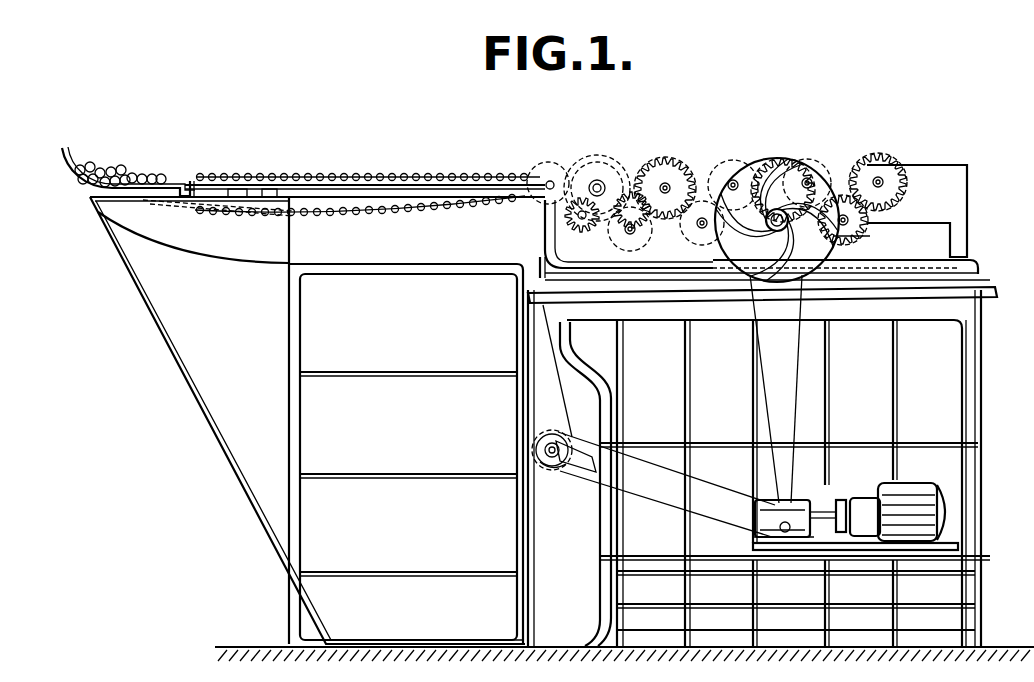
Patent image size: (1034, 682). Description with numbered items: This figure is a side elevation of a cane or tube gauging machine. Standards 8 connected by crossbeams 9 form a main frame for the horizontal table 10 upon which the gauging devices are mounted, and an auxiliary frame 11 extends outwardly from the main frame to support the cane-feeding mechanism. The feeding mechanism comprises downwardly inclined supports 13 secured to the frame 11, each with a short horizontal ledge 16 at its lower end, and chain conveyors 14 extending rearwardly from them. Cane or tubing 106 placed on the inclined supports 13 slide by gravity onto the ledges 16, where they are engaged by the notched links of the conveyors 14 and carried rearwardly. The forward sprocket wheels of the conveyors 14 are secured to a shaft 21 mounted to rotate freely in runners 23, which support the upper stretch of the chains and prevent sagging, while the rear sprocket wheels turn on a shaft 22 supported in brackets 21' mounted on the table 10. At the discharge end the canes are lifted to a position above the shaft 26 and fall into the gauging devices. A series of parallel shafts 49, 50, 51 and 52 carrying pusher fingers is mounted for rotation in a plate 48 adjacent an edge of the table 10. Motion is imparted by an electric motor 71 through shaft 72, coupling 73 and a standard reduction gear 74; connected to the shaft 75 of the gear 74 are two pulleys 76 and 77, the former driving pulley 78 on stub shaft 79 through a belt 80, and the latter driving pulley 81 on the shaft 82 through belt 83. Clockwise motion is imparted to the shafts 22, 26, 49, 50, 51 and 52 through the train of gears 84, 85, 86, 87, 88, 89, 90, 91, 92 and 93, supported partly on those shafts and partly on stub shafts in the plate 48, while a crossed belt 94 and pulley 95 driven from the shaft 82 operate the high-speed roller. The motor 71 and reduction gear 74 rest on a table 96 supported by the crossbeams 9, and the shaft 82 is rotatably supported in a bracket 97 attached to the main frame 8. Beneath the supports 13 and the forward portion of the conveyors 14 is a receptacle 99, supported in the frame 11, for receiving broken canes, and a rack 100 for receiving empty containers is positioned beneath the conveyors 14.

The standards 8 is at (960, 386).
The crossbeams 9 is at (932, 316).
The horizontal table 10 is at (983, 262).
The auxiliary frame 11 is at (168, 350).
The downwardly inclined supports or brackets 13 is at (70, 170).
The chain conveyors 14 is at (356, 173).
The short horizontal ledge 16 is at (191, 178).
The shaft 21 is at (368, 160).
The brackets 21' is at (603, 233).
The shaft 22 is at (556, 178).
The runners 23 is at (436, 185).
The shaft 26 is at (597, 186).
The plate 48 is at (952, 166).
The shaft 49 is at (667, 184).
The shaft 50 is at (750, 165).
The shaft 51 is at (818, 176).
The shaft 52 is at (882, 180).
The electric motor 71 is at (942, 484).
The shaft 72 is at (862, 496).
The coupling 73 is at (843, 500).
The reduction gear 74 is at (790, 500).
The shaft 75 is at (756, 532).
The pulley 76 is at (758, 524).
The pulley 77 is at (788, 512).
The pulley 78 is at (772, 160).
The stub shaft 79 is at (836, 241).
The belt 80 is at (814, 382).
The pulley 81 is at (557, 468).
The shaft 82 is at (544, 450).
The belt 83 is at (668, 514).
The gear 84 is at (782, 172).
The gear 85 is at (830, 185).
The gear 86 is at (848, 200).
The gear 87 is at (906, 168).
The gear 88 is at (734, 160).
The gear 89 is at (703, 200).
The gear 90 is at (666, 158).
The gear 91 is at (634, 172).
The gear 92 is at (602, 178).
The gear 93 is at (548, 162).
The crossed belt 94 is at (560, 396).
The pulley 95 is at (540, 266).
The table 96 is at (936, 552).
The bracket 97 is at (590, 476).
The receptacle 99 is at (230, 264).
The rack 100 is at (303, 331).
The cane or tubing 106 is at (119, 166).